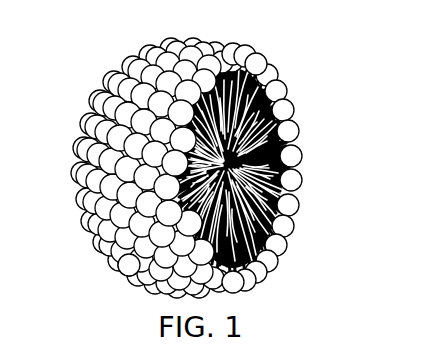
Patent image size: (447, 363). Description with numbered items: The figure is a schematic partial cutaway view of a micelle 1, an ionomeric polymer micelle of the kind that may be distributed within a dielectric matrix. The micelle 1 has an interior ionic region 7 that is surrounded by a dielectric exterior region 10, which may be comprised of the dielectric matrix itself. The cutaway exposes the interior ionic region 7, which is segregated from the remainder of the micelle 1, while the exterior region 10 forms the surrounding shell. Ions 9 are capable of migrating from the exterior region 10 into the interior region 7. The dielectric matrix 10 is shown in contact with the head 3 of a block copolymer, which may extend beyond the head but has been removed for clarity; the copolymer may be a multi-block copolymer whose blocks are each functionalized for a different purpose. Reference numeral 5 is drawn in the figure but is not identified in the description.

The micelle 1 is at (195, 153).
The dielectric exterior region 10 is at (258, 28).
The ions 9 is at (302, 23).
The hydrophobic tails / core 5 is at (294, 111).
The head of a block copolymer 3 is at (295, 163).
The interior ionic region 7 is at (122, 267).